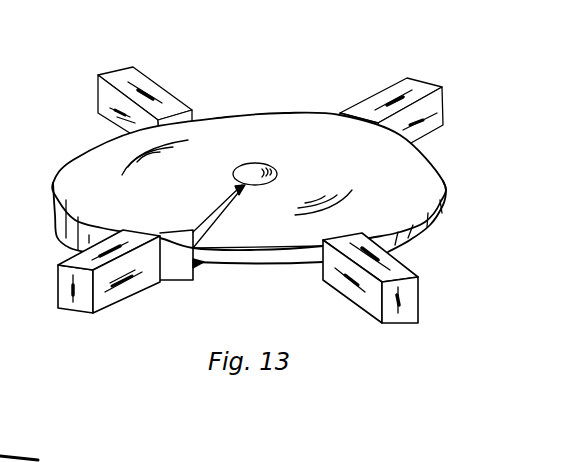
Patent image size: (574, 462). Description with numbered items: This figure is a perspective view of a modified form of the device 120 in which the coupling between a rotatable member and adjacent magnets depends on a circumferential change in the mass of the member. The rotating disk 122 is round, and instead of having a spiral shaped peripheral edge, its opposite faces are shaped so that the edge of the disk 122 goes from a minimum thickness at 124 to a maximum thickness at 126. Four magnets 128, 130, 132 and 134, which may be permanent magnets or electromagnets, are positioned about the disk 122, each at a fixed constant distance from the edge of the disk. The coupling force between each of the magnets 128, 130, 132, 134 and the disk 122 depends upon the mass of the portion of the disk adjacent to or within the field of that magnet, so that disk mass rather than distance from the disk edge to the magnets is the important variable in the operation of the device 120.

The device 120 is at (401, 53).
The rotating disk 122 is at (416, 240).
The minimum thickness 124 is at (207, 257).
The maximum thickness 126 is at (177, 257).
The magnet 128 is at (364, 98).
The magnet 130 is at (419, 303).
The magnet 132 is at (121, 302).
The magnet 134 is at (162, 81).